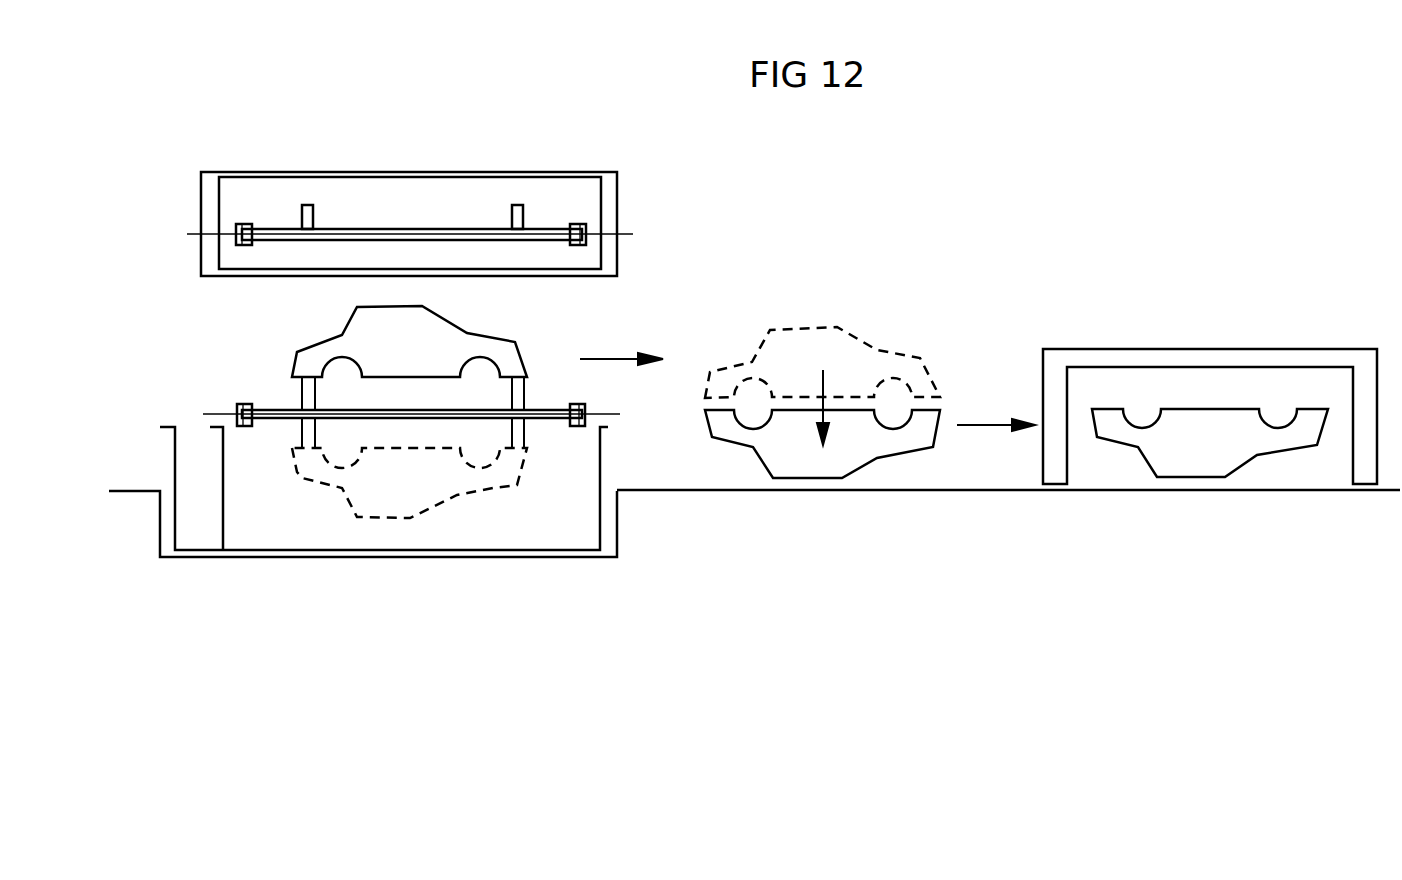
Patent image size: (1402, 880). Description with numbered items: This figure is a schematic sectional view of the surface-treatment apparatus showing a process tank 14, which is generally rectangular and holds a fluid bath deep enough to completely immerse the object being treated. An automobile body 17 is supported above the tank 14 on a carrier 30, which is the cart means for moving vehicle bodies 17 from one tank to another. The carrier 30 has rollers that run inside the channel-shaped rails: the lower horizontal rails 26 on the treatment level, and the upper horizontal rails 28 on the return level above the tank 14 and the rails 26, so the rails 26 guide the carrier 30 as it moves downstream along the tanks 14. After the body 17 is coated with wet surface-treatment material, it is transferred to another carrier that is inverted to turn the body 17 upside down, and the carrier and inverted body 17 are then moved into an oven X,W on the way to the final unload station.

The process tank 14 is at (602, 460).
The automobile body 17 is at (462, 335).
The lower horizontal rail 26 is at (240, 406).
The upper horizontal rail 28 is at (240, 224).
The carrier 30 is at (458, 222).
The oven X,W is at (1253, 357).